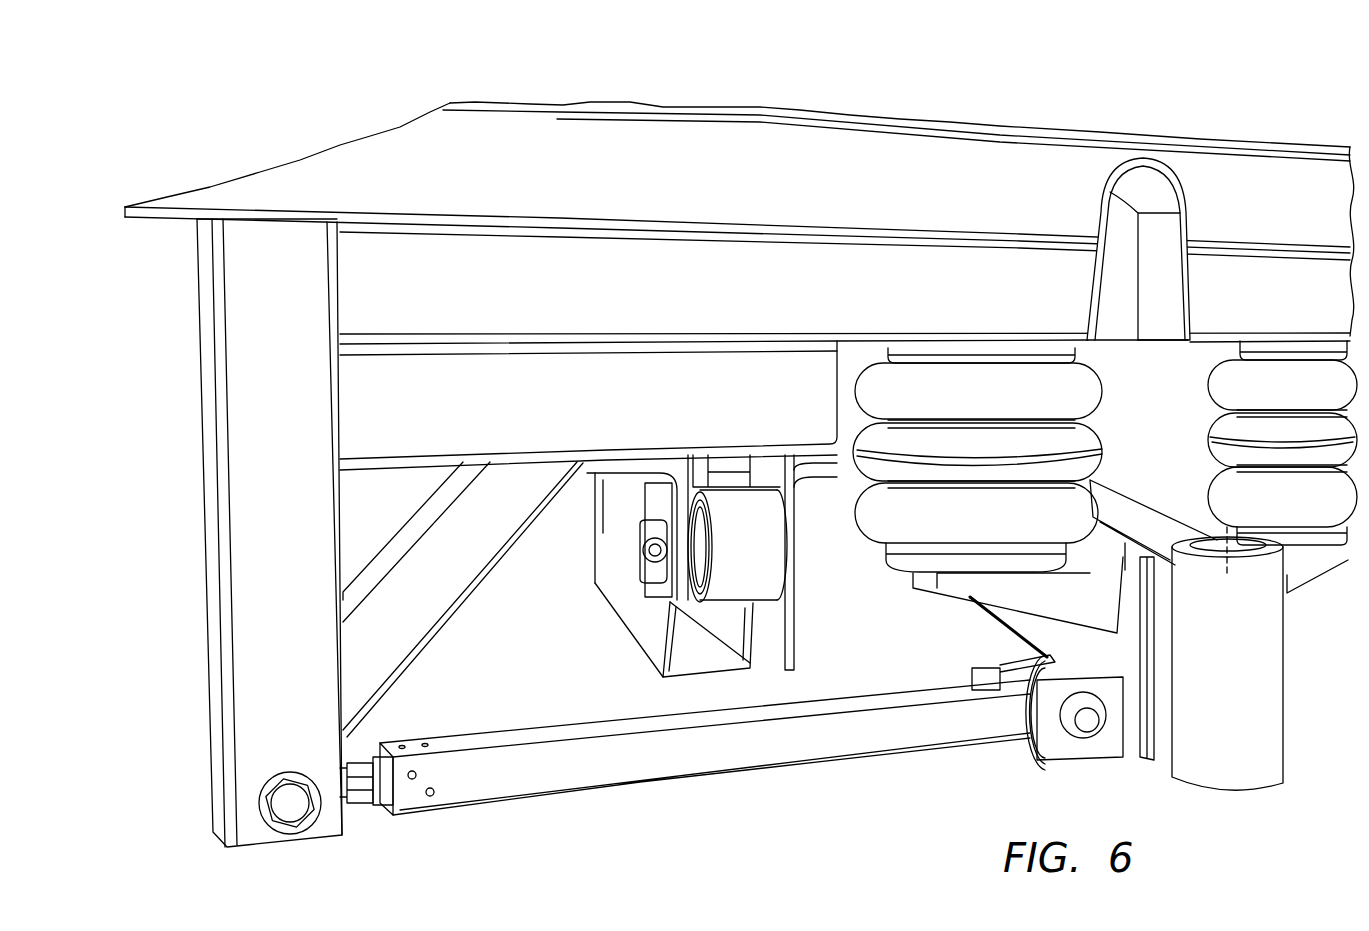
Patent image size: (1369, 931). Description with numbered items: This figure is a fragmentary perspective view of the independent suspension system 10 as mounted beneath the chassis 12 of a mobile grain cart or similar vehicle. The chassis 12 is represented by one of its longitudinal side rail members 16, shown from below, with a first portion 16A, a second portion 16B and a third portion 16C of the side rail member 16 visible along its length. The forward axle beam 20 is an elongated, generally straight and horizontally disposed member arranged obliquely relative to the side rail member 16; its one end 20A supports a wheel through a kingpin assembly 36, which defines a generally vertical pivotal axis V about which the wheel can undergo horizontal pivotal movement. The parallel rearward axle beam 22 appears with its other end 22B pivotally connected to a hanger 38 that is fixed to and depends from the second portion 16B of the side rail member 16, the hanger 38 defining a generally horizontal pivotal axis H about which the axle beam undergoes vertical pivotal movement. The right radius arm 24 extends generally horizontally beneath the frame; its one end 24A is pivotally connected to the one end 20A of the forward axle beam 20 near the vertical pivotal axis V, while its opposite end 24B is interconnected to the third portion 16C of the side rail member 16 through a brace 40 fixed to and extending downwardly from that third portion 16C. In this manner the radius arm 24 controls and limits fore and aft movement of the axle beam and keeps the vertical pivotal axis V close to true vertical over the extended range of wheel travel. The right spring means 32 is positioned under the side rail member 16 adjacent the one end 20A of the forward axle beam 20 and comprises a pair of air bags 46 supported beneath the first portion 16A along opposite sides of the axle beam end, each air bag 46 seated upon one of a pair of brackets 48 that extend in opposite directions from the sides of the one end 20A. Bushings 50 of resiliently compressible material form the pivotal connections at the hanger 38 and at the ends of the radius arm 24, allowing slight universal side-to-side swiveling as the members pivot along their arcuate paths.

The independent suspension system 10 is at (697, 773).
The chassis 12 is at (341, 138).
The longitudinal side rail member 16 is at (985, 128).
The first portion of longitudinal side rail 16A is at (1113, 162).
The second portion of longitudinal side rail 16B is at (643, 150).
The third portion of longitudinal side rail 16C is at (215, 186).
The forward axle beam 20 is at (1145, 504).
The one end of forward axle beam 20A is at (1157, 755).
The rearward axle beam 22 is at (669, 536).
The other end of rearward axle beam 22B is at (653, 633).
The right radius arm 24 is at (697, 773).
The one end of right radius arm 24A is at (1027, 758).
The opposite end of right radius arm 24B is at (360, 805).
The right spring means 32 is at (1105, 456).
The kingpin assembly 36 is at (1248, 658).
The hanger 38 is at (670, 606).
The brace 40 is at (212, 568).
The air bag 46 is at (992, 536).
The bracket 48 is at (970, 590).
The bushing 50 is at (761, 562).
The horizontal pivotal axis H is at (640, 552).
The vertical pivotal axis V is at (1229, 578).